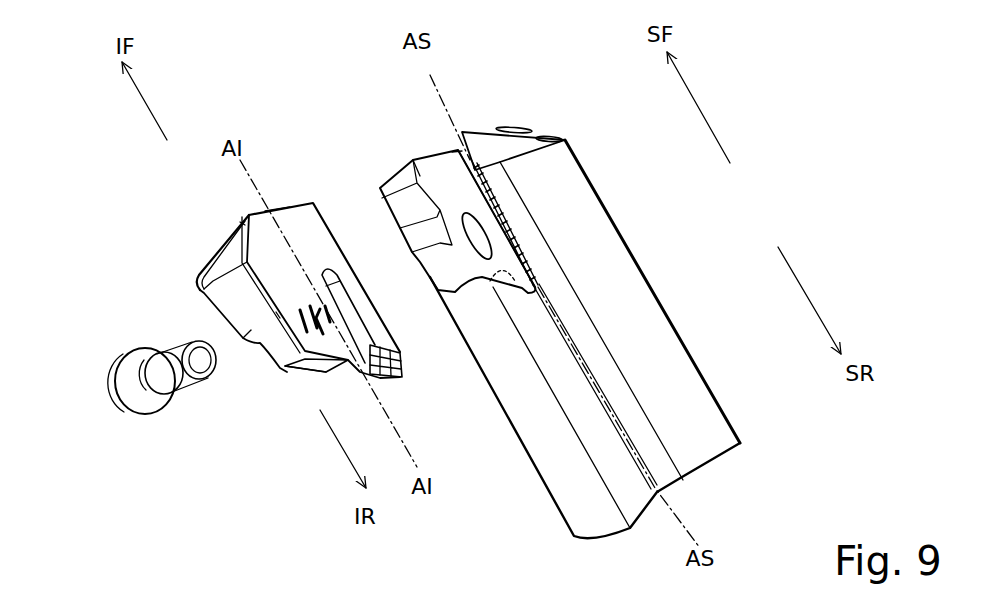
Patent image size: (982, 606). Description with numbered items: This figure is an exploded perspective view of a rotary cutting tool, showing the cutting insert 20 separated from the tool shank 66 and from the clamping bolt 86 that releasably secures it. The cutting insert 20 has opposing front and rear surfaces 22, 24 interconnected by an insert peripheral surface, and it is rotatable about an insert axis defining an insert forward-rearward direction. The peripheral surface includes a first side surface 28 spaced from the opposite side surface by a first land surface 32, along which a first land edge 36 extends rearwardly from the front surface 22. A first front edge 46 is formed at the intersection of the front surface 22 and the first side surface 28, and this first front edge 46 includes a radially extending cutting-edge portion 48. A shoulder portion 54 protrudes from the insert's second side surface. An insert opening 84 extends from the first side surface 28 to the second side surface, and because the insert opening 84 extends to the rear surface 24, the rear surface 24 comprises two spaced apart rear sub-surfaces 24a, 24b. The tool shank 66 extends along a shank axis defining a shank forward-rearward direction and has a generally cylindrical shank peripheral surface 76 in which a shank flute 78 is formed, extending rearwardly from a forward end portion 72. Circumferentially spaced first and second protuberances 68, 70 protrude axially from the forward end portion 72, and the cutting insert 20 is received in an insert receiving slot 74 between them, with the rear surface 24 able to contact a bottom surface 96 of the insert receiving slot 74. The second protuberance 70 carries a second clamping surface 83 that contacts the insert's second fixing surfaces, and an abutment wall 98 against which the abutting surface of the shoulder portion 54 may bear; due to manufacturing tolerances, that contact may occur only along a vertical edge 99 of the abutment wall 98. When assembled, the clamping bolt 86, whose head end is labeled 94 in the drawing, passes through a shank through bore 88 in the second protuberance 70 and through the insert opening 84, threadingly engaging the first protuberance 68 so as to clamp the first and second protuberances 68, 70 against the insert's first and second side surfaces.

The cutting insert 20 is at (178, 248).
The front surface 22 is at (223, 256).
The rear surface 24 is at (324, 370).
The rear sub-surface 24a is at (296, 374).
The rear sub-surface 24b is at (375, 373).
The first side surface 28 is at (329, 257).
The first land surface 32 is at (279, 336).
The first land edge 36 is at (275, 338).
The first front edge 46 is at (279, 201).
The cutting-edge portion 48 is at (240, 220).
The shoulder portion 54 is at (195, 285).
The tool shank 66 is at (655, 261).
The first protuberance 68 is at (541, 156).
The second protuberance 70 is at (396, 186).
The forward end portion 72 is at (489, 147).
The insert receiving slot 74 is at (453, 143).
The shank peripheral surface 76 is at (543, 430).
The shank flute 78 is at (595, 423).
The second clamping surface 83 is at (470, 198).
The insert opening 84 is at (352, 327).
The clamping bolt 86 is at (107, 357).
The shank through bore 88 is at (474, 240).
The screw head 94 is at (150, 418).
The bottom surface 96 is at (480, 285).
The abutment wall 98 is at (427, 222).
The vertical edge 99 is at (420, 176).